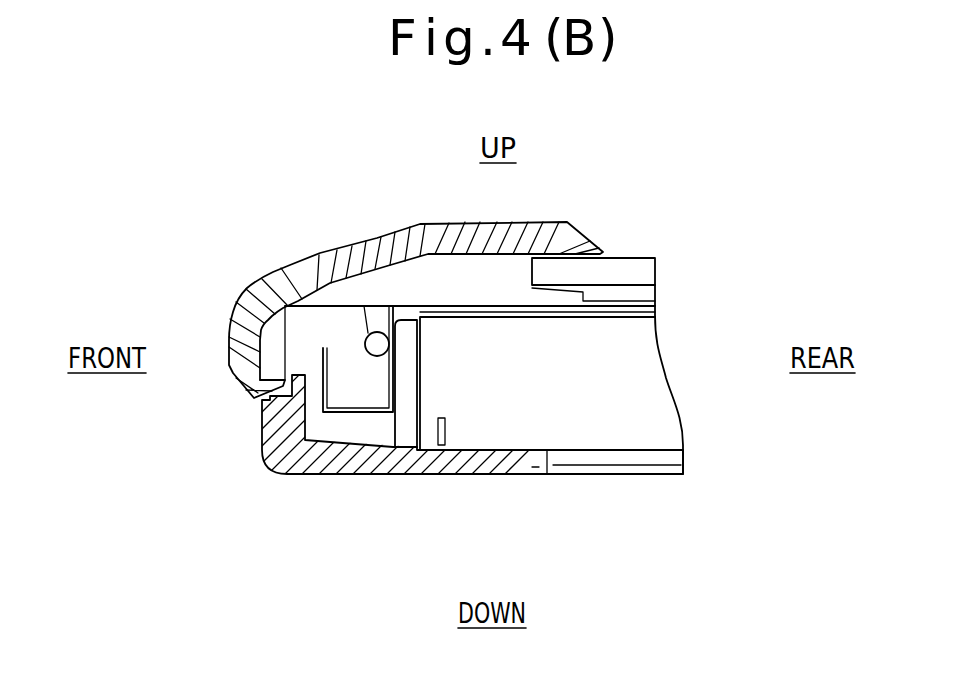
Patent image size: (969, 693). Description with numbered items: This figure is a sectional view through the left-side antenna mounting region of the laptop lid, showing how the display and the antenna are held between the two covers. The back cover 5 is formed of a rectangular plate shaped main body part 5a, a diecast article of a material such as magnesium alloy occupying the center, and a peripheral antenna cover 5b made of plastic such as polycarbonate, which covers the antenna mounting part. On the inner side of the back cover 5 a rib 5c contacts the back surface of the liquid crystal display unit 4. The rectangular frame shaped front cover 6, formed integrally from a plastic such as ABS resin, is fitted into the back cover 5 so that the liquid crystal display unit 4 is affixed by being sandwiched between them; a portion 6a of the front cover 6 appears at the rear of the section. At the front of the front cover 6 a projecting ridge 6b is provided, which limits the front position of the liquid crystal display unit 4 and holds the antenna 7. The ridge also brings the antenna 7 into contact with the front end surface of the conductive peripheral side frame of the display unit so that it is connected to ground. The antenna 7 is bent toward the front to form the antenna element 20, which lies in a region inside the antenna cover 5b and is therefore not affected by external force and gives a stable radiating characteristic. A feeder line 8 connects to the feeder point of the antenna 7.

The liquid crystal display unit 4 is at (642, 388).
The back cover 5 is at (572, 212).
The main body part 5a is at (630, 262).
The antenna cover 5b is at (308, 275).
The ribs 5c is at (583, 297).
The front cover 6 is at (447, 485).
The case rear portion 6a is at (511, 473).
The projecting ridge 6b is at (393, 435).
The antenna 7 is at (338, 420).
The feeder line 8 is at (375, 336).
The antenna element 20 is at (322, 360).